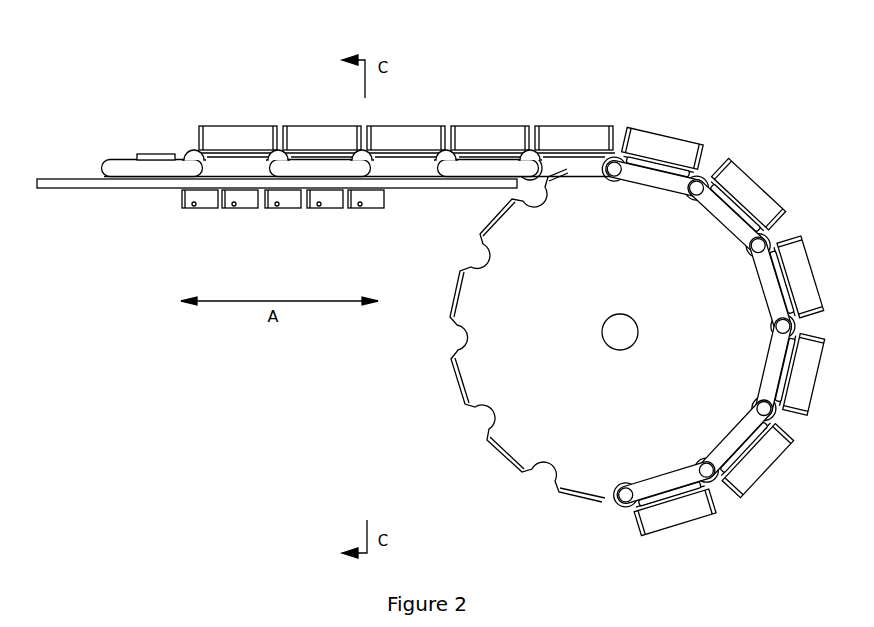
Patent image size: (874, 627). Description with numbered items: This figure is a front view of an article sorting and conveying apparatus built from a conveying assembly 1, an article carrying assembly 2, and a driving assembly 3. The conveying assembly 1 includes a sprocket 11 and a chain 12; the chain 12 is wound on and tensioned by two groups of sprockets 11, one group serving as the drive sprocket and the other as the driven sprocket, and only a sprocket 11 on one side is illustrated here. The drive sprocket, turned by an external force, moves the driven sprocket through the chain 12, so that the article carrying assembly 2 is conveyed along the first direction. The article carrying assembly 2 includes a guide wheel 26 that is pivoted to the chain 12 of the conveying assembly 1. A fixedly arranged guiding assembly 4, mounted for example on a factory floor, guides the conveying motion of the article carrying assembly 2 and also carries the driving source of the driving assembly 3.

The conveying assembly 1 is at (670, 63).
The sprocket 11 is at (667, 217).
The chain 12 is at (656, 152).
The article carrying assembly 2 is at (567, 138).
The guide wheel 26 is at (192, 156).
The driving assembly 3 is at (292, 196).
The guiding assembly 4 is at (60, 181).